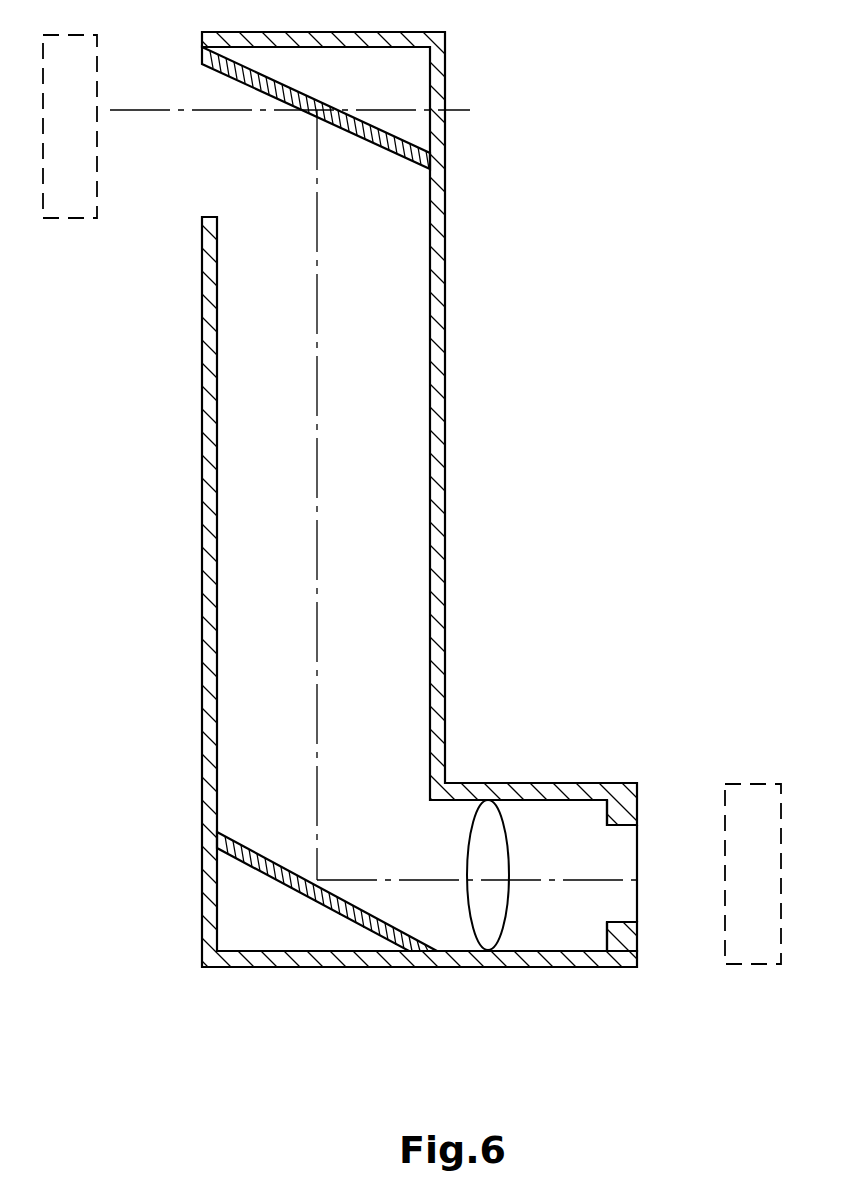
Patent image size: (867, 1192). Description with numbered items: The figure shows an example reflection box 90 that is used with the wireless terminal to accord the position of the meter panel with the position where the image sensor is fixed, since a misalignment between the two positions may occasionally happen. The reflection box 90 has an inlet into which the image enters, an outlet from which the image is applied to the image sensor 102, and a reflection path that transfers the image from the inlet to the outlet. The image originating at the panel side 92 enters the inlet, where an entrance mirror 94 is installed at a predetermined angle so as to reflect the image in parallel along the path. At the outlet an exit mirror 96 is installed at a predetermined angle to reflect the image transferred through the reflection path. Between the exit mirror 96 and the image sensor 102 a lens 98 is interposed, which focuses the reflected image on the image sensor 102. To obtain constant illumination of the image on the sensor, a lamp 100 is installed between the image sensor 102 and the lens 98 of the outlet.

The reflection box 90 is at (648, 113).
The light source 92 is at (83, 220).
The entrance mirror 94 is at (375, 127).
The exit mirror 96 is at (357, 920).
The lens 98 is at (488, 818).
The lamp 100 is at (624, 815).
The image sensor 102 is at (740, 782).